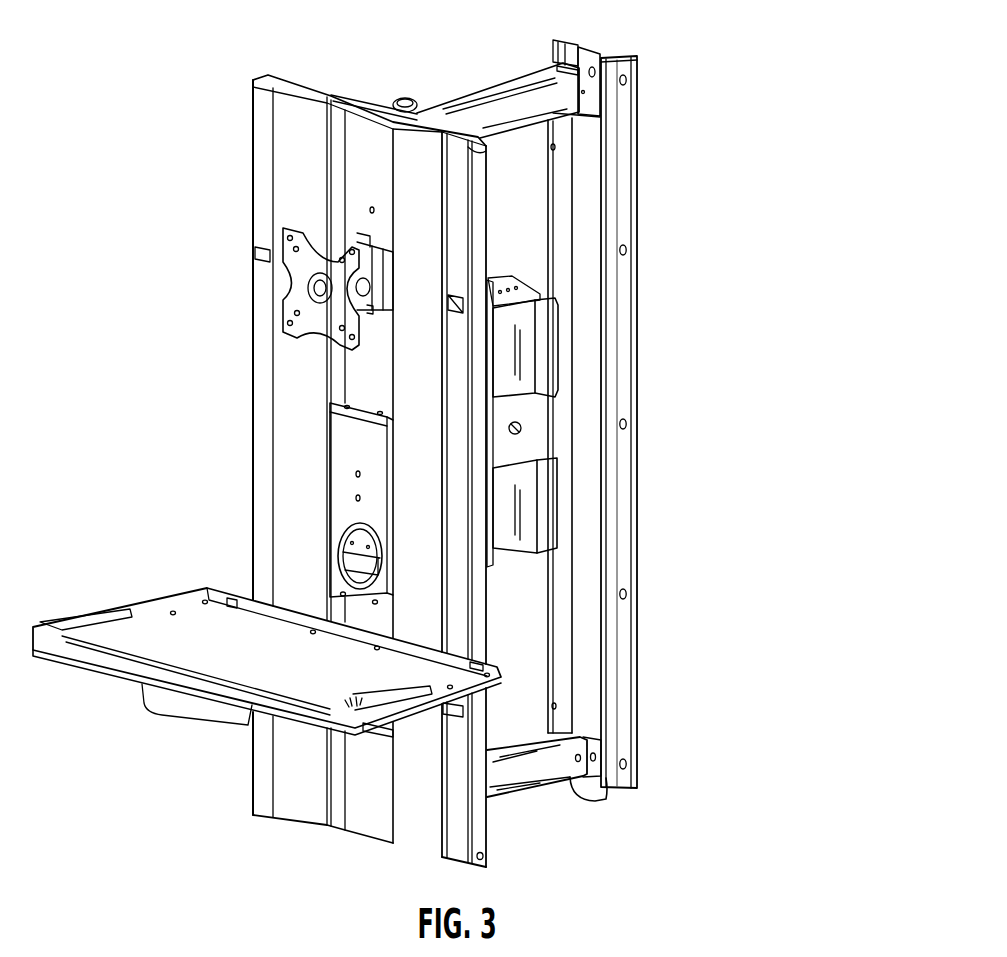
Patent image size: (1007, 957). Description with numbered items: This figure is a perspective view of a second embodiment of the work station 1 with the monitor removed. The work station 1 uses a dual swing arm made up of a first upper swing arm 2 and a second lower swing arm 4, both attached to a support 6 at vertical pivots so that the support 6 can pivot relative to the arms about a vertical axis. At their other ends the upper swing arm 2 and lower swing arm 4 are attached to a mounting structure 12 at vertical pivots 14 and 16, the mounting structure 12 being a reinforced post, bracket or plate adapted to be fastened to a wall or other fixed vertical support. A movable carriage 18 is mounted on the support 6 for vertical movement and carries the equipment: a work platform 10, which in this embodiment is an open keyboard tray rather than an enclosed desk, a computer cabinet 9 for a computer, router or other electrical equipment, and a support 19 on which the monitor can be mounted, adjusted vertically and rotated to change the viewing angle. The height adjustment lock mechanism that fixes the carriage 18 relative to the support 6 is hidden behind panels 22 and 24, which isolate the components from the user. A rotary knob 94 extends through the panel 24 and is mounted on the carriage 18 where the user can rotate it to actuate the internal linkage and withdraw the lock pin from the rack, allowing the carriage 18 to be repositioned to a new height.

The work station 1 is at (677, 220).
The first upper swing arm 2 is at (499, 85).
The second lower swing arm 4 is at (534, 792).
The support 6 is at (366, 91).
The computer cabinet 9 is at (507, 290).
The work platform 10 is at (164, 600).
The mounting structure 12 is at (640, 566).
The vertical pivot 14 is at (587, 51).
The vertical pivot 16 is at (574, 784).
The movable carriage 18 is at (250, 818).
The support 19 is at (284, 315).
The panel 22 is at (304, 810).
The panel 24 is at (378, 452).
The rotary knob 94 is at (350, 553).